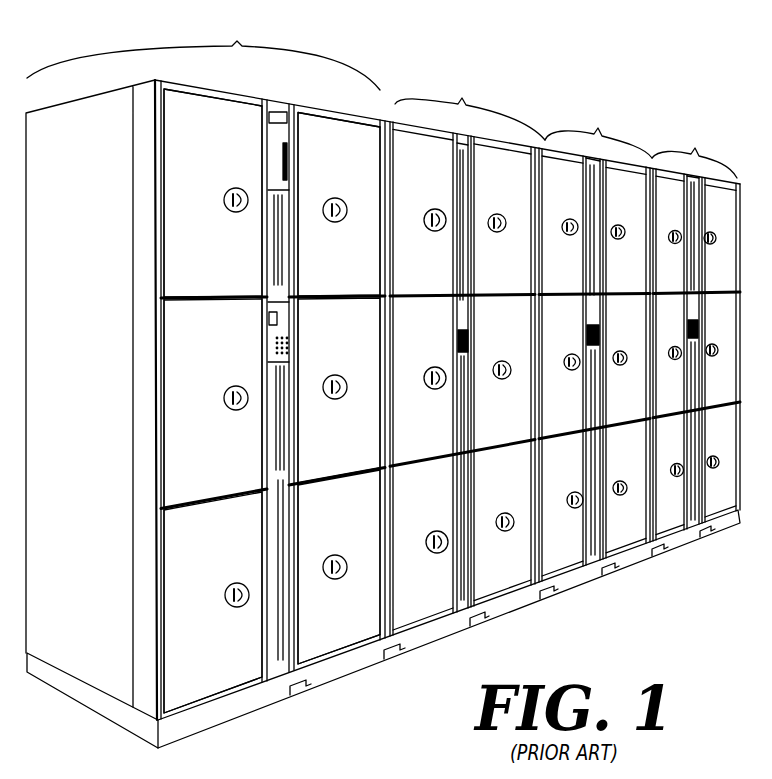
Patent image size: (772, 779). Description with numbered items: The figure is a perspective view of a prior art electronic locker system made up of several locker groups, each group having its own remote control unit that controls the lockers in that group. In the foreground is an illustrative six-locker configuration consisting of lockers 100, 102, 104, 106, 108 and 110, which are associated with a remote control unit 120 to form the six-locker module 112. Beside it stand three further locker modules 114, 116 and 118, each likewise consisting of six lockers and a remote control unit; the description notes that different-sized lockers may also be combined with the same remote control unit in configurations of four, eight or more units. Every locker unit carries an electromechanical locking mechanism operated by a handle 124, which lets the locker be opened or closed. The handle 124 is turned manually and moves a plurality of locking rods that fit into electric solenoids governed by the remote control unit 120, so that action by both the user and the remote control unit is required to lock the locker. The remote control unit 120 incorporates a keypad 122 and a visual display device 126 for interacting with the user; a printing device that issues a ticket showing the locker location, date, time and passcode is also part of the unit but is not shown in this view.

The locker 100 is at (172, 193).
The locker 102 is at (186, 410).
The locker 104 is at (183, 604).
The locker 106 is at (348, 624).
The locker 108 is at (328, 441).
The locker 110 is at (314, 142).
The 6-locker module 112 is at (211, 367).
The locker module 114 is at (467, 357).
The locker module 116 is at (595, 344).
The locker module 118 is at (696, 332).
The remote control unit 120 is at (280, 686).
The keypad 122 is at (275, 340).
The handle 124 is at (228, 192).
The visual display device 126 is at (266, 318).